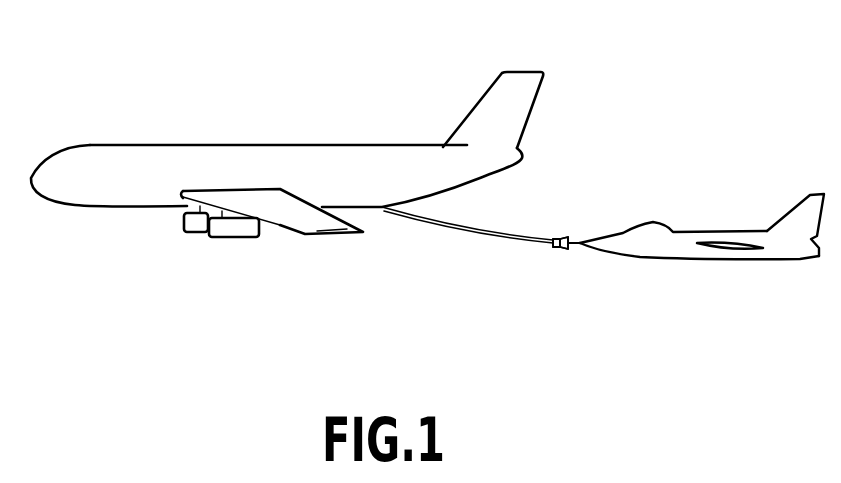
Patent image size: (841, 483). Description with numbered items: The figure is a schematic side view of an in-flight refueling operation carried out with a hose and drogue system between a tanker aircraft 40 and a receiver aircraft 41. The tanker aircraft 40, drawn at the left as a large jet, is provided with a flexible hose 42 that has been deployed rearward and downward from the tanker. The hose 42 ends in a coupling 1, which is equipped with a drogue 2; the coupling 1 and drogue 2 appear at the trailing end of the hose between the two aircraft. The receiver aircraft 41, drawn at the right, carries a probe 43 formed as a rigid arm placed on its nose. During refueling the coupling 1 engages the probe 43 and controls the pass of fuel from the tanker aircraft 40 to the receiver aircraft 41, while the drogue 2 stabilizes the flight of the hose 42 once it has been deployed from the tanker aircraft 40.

The tanker aircraft 40 is at (195, 145).
The receiver aircraft 41 is at (708, 233).
The flexible hose 42 is at (465, 228).
The probe 43 is at (577, 237).
The coupling 1 is at (552, 250).
The drogue 2 is at (564, 253).